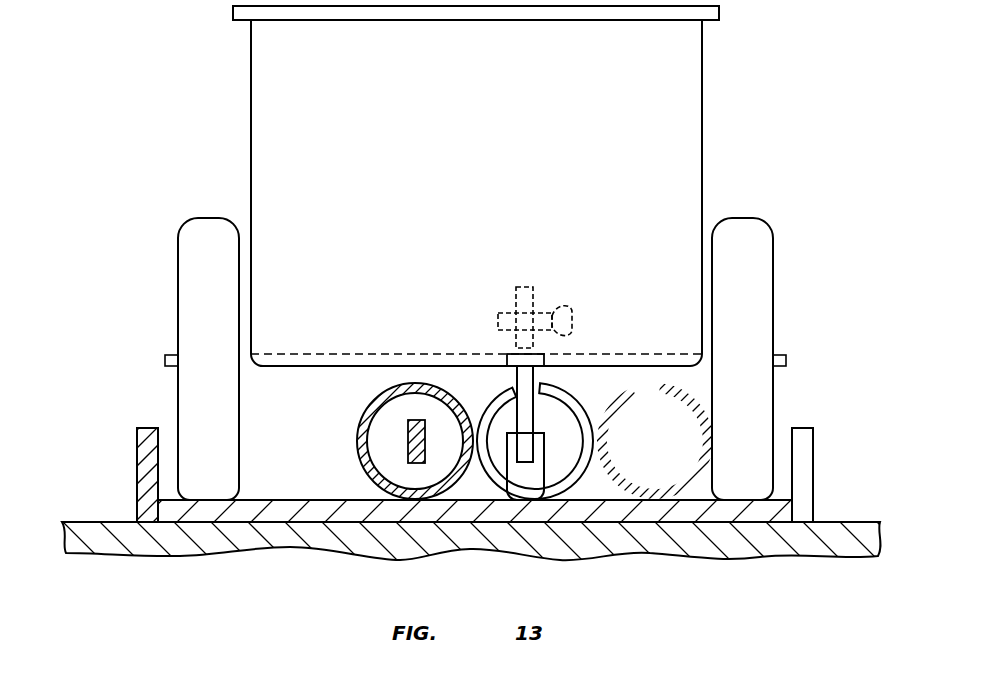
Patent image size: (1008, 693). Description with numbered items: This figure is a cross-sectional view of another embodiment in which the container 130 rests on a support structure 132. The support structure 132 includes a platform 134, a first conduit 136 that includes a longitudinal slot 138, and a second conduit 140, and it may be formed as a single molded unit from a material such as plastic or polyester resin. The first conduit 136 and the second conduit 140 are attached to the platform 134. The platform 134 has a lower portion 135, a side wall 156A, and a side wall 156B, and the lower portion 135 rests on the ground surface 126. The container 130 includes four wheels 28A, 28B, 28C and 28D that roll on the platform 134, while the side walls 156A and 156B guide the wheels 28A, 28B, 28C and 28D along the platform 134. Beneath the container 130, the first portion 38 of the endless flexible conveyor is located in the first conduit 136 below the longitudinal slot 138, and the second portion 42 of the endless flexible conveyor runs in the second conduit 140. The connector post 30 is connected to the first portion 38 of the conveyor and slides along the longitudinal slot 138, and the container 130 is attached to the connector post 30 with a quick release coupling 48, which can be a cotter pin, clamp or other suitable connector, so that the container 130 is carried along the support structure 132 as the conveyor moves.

The container 130 is at (692, 115).
The wheel 28A is at (188, 316).
The wheel 28B is at (762, 319).
The wheel 28C is at (193, 230).
The wheel 28D is at (768, 229).
The support structure 132 is at (842, 376).
The platform 134 is at (808, 513).
The side wall 156A is at (145, 443).
The side wall 156B is at (807, 446).
The ground surface 126 is at (103, 520).
The lower portion 135 is at (313, 510).
The second conduit 140 is at (364, 455).
The second portion of the endless flexible conveyor 42 is at (410, 433).
The first conduit 136 is at (590, 443).
The connector post 30 is at (527, 407).
The first portion of the endless flexible conveyor 38 is at (530, 473).
The longitudinal slot 138 is at (513, 392).
The quick release coupling 48 is at (568, 322).